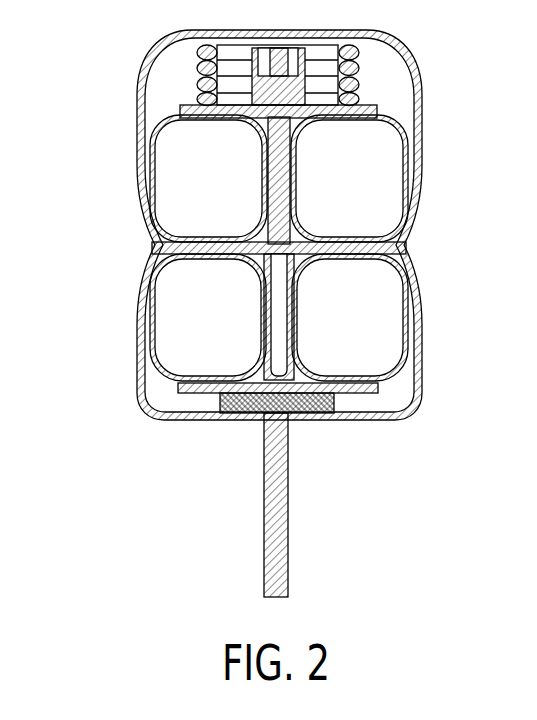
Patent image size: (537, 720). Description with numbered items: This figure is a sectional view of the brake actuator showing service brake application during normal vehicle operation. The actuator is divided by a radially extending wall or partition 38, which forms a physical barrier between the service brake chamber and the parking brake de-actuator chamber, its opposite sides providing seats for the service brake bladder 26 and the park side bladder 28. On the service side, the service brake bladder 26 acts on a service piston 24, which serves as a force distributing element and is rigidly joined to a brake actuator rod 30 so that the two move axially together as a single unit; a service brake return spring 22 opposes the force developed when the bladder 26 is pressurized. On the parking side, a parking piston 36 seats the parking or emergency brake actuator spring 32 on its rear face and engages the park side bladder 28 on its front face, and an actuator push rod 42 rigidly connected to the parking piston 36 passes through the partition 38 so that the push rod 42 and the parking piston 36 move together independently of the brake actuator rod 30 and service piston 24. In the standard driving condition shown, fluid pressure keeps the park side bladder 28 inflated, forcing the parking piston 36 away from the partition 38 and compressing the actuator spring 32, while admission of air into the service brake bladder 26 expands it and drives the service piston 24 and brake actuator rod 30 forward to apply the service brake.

The service brake return spring 22 is at (208, 417).
The service piston 24 is at (178, 387).
The service brake bladder 26 is at (403, 348).
The park side bladder 28 is at (400, 133).
The brake actuator rod 30 is at (263, 523).
The parking or emergency brake actuator spring 32 is at (196, 66).
The parking piston 36 is at (178, 108).
The wall or partition 38 is at (400, 233).
The actuator push rod 42 is at (263, 198).